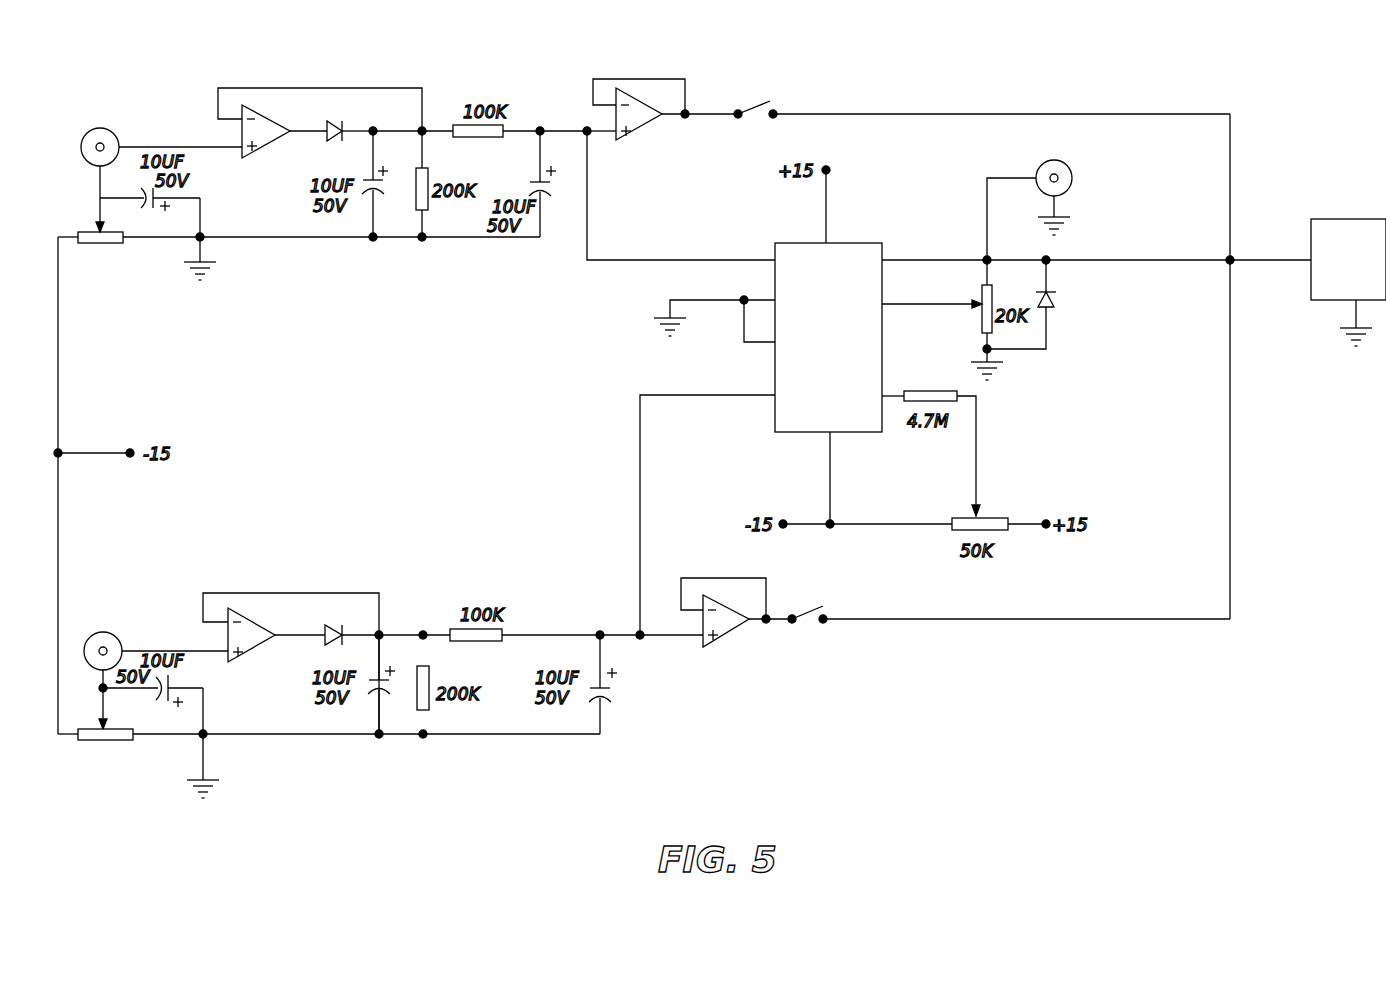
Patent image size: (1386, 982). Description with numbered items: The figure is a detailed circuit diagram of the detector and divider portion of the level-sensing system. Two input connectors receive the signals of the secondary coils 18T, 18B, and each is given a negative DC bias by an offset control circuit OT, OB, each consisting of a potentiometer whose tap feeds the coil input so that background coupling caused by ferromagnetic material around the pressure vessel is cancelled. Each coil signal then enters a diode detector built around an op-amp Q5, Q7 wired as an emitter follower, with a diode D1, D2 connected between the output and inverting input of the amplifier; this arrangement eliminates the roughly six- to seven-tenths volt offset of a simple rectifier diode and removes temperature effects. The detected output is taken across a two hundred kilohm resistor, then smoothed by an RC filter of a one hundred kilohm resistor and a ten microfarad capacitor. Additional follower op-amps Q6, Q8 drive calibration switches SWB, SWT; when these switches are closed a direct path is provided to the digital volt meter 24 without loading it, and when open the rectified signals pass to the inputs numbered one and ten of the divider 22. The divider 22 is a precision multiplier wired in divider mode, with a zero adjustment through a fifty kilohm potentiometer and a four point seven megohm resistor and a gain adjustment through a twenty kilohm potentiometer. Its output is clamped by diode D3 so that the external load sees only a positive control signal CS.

The secondary coil 18B is at (105, 128).
The offset control circuit OB is at (85, 228).
The secondary coil 18T is at (118, 638).
The offset control circuit OT is at (133, 741).
The divider circuit 22 is at (838, 382).
The digital volt meter 24 is at (1362, 258).
The control signal CS is at (1069, 198).
The switch SWB is at (752, 97).
The switch SWT is at (803, 633).
The op-amp Q5 is at (320, 162).
The op-amp follower Q6 is at (639, 116).
The op-amp Q7 is at (291, 663).
The op-amp follower Q8 is at (723, 621).
The diode D1 is at (331, 118).
The diode D2 is at (327, 622).
The diode D3 is at (1036, 304).